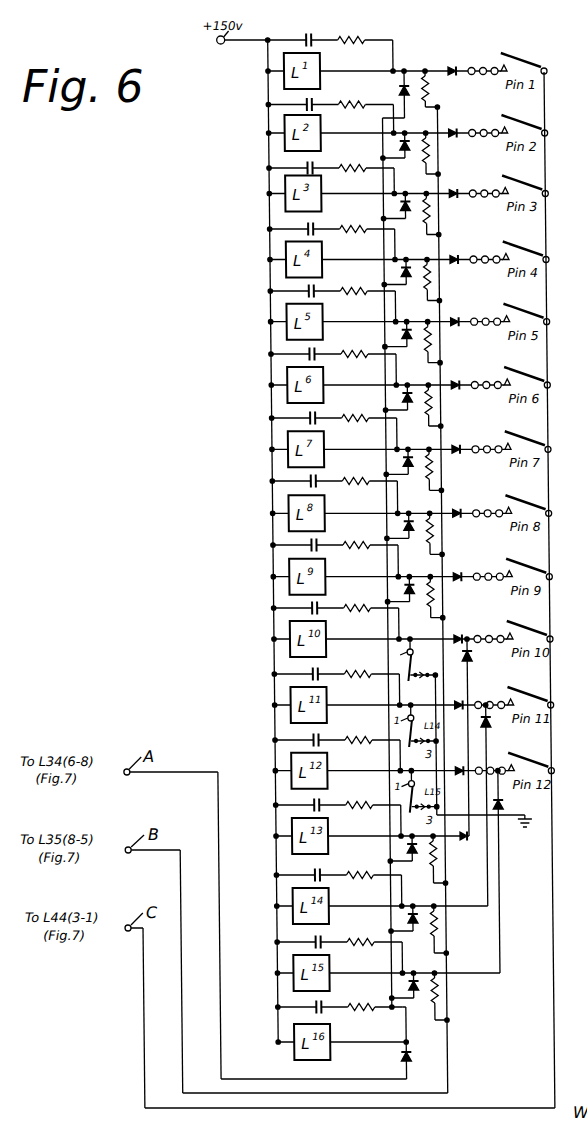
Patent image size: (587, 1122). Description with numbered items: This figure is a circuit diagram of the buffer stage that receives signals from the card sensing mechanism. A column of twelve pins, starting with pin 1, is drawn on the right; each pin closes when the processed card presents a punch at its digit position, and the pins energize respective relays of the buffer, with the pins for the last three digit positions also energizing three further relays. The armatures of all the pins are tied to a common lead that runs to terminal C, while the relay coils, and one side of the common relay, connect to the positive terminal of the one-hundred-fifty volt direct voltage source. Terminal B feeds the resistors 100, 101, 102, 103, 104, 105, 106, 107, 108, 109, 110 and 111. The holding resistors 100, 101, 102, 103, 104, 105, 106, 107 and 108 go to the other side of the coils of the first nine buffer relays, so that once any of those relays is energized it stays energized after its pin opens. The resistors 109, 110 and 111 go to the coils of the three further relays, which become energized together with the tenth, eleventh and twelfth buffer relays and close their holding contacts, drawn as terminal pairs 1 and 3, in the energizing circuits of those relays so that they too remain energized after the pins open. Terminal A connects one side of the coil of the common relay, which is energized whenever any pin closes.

The resistor 100 is at (431, 97).
The resistor 101 is at (431, 159).
The resistor 102 is at (431, 220).
The resistor 103 is at (431, 286).
The resistor 104 is at (431, 348).
The resistor 105 is at (431, 411).
The resistor 106 is at (431, 475).
The resistor 107 is at (431, 539).
The resistor 108 is at (431, 603).
The resistor 109 is at (431, 866).
The resistor 110 is at (431, 936).
The resistor 111 is at (431, 1003).
The pin 1 is at (416, 659).
The contact terminal 3 is at (427, 688).